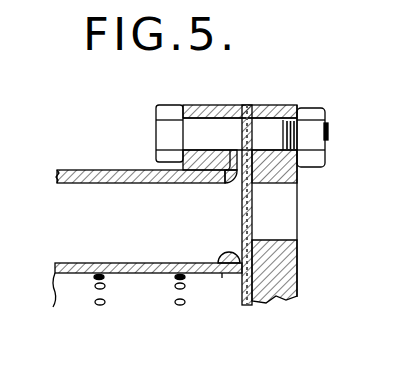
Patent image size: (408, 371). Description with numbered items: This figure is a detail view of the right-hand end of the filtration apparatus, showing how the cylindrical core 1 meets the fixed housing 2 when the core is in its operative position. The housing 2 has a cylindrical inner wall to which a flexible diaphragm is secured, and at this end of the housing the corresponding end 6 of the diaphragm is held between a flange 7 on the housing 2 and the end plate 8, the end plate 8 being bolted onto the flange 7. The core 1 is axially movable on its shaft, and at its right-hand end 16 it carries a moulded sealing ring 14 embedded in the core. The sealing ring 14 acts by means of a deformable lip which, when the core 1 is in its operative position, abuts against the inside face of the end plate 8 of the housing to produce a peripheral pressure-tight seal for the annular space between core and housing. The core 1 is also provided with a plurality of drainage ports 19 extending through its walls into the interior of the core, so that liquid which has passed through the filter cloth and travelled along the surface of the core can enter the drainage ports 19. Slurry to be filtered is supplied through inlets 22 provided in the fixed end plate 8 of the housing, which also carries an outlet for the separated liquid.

The cylindrical core 1 is at (147, 285).
The housing 2 is at (133, 172).
The end of the diaphragm 6 is at (224, 186).
The flange 7 is at (205, 108).
The end plate 8 is at (267, 283).
The sealing ring 14 is at (217, 256).
The right-hand end of the core 16 is at (222, 275).
The drainage ports 19 is at (100, 264).
The inlets 22 is at (268, 227).